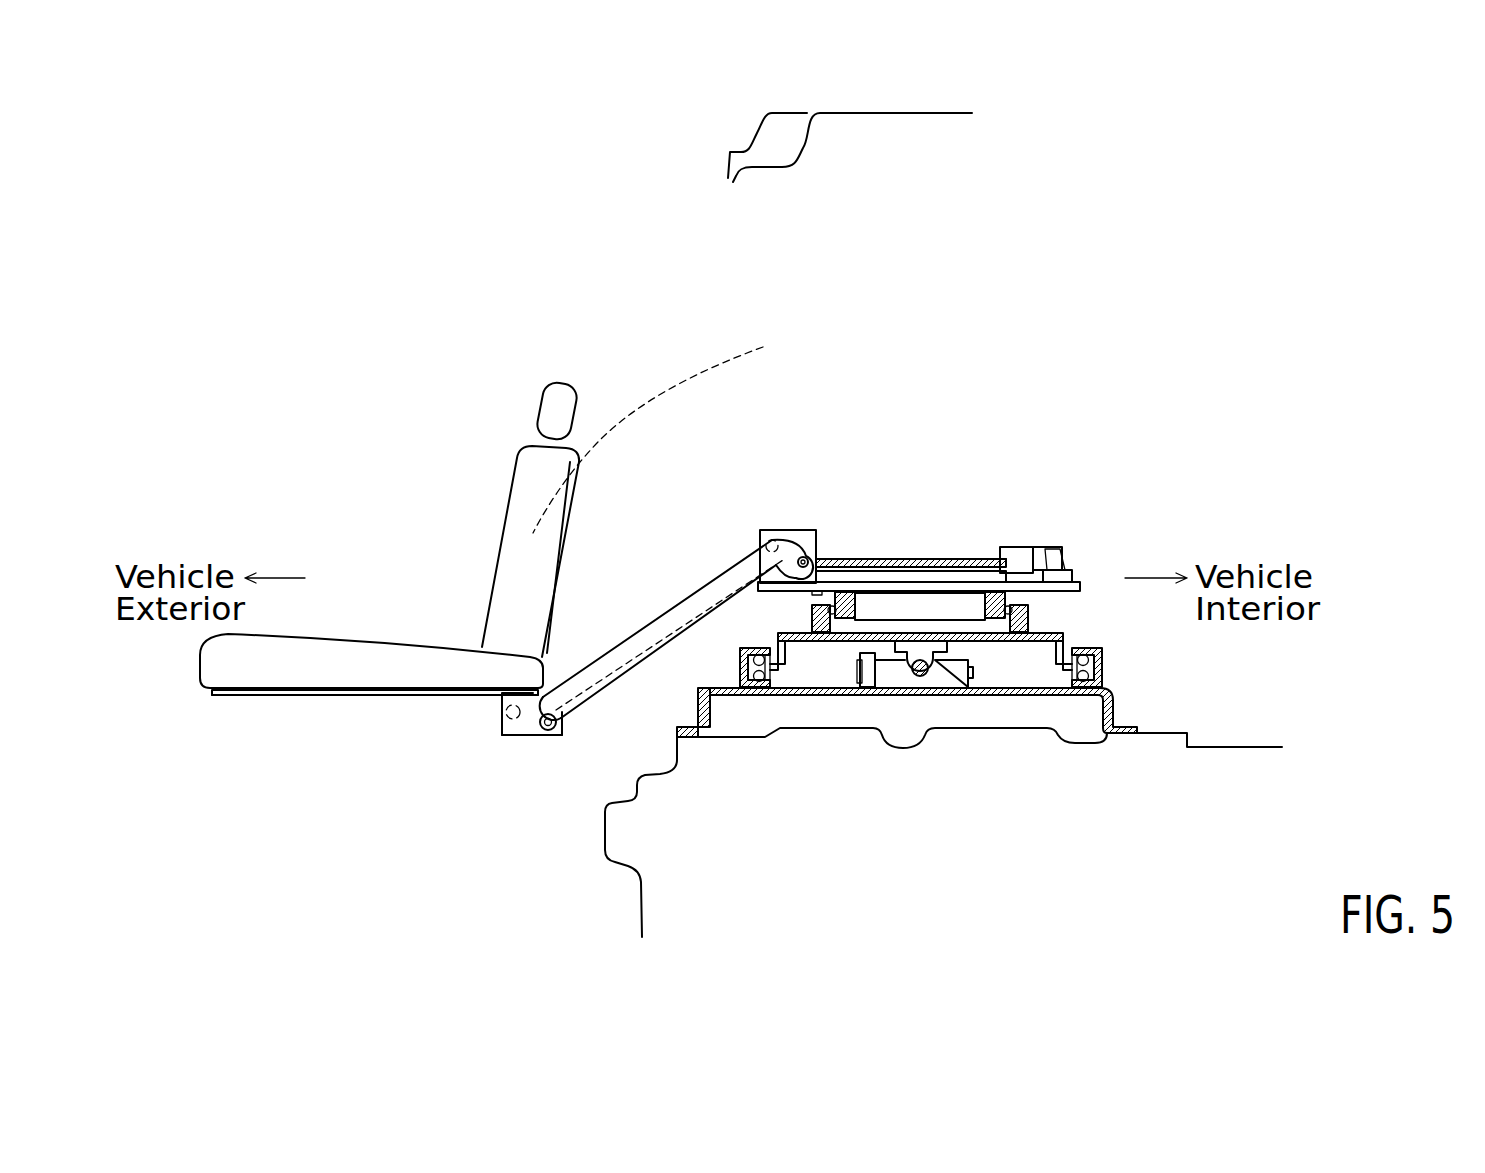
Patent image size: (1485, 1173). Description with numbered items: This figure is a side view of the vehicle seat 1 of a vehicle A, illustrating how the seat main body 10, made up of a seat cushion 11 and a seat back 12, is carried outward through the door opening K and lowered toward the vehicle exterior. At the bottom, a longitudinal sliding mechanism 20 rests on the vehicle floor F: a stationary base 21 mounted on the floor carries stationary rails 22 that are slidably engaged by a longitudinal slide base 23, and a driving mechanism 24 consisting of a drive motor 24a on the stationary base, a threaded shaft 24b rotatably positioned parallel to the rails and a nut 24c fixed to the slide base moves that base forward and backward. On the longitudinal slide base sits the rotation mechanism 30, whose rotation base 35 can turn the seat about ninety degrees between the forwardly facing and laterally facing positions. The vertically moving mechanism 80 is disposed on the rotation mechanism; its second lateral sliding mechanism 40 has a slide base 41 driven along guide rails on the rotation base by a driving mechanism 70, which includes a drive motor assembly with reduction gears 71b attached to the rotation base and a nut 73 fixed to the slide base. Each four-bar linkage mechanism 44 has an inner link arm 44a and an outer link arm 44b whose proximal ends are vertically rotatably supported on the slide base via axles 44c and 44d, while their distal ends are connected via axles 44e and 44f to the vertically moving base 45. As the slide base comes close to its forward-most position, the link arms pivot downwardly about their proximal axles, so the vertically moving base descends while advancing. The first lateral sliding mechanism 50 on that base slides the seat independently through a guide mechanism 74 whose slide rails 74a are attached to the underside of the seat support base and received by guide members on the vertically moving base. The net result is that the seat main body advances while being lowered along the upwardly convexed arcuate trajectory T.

The vehicle seat 1 is at (628, 381).
The seat main body 10 is at (435, 581).
The seat cushion 11 is at (344, 655).
The seat back 12 is at (533, 516).
The longitudinal sliding mechanism 20 is at (726, 678).
The stationary base 21 is at (1120, 707).
The stationary rails 22 is at (747, 699).
The longitudinal slide base 23 is at (812, 642).
The driving mechanism 24 is at (952, 686).
The drive motor 24a is at (971, 673).
The threaded shaft 24b is at (923, 680).
The nut 24c is at (902, 657).
The rotation mechanism 30 is at (787, 607).
The rotation base 35 is at (1085, 584).
The second lateral sliding mechanism 40 is at (978, 502).
The vertically moving mechanism 80 is at (1077, 528).
The slide base 41 is at (792, 540).
The four-bar linkage mechanism 44 is at (708, 550).
The inner link arm 44a is at (617, 640).
The outer link arm 44b is at (667, 617).
The axle 44c is at (762, 530).
The axle 44d is at (813, 530).
The axle 44e is at (500, 713).
The axle 44f is at (544, 731).
The vertically moving base 45 is at (525, 772).
The first lateral sliding mechanism 50 is at (530, 728).
The driving mechanism 70 is at (882, 548).
The reduction gears 71b is at (1045, 546).
The nut 73 is at (925, 551).
The guide mechanism 74 is at (438, 712).
The slide rails 74a is at (372, 697).
The vehicle A is at (597, 836).
The vehicle floor F is at (1243, 748).
The door opening K is at (729, 297).
The arcuate trajectory T is at (703, 367).